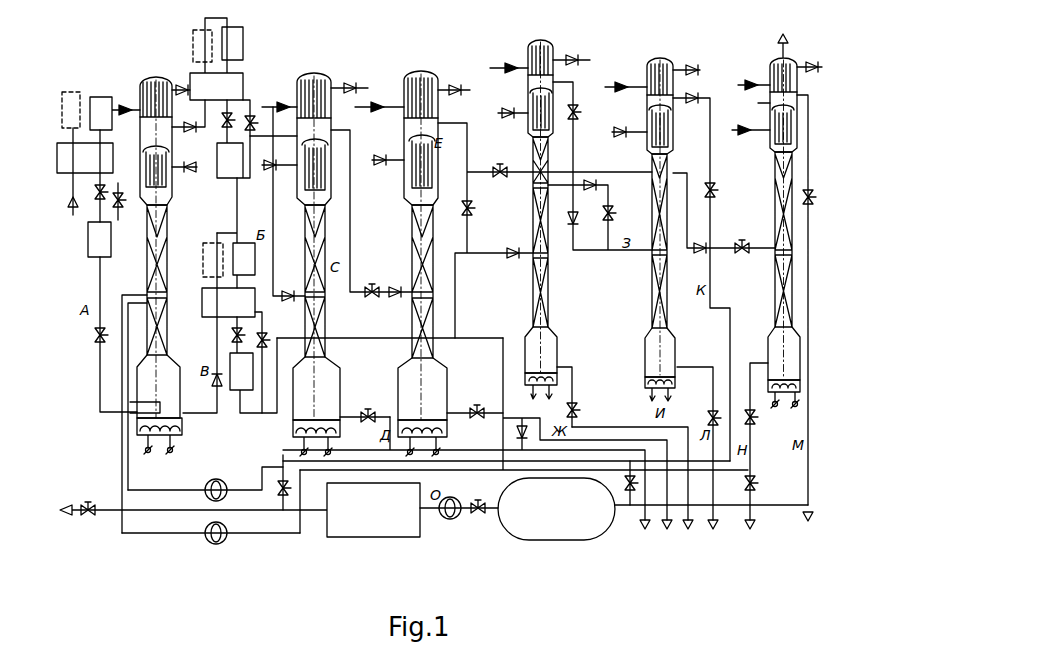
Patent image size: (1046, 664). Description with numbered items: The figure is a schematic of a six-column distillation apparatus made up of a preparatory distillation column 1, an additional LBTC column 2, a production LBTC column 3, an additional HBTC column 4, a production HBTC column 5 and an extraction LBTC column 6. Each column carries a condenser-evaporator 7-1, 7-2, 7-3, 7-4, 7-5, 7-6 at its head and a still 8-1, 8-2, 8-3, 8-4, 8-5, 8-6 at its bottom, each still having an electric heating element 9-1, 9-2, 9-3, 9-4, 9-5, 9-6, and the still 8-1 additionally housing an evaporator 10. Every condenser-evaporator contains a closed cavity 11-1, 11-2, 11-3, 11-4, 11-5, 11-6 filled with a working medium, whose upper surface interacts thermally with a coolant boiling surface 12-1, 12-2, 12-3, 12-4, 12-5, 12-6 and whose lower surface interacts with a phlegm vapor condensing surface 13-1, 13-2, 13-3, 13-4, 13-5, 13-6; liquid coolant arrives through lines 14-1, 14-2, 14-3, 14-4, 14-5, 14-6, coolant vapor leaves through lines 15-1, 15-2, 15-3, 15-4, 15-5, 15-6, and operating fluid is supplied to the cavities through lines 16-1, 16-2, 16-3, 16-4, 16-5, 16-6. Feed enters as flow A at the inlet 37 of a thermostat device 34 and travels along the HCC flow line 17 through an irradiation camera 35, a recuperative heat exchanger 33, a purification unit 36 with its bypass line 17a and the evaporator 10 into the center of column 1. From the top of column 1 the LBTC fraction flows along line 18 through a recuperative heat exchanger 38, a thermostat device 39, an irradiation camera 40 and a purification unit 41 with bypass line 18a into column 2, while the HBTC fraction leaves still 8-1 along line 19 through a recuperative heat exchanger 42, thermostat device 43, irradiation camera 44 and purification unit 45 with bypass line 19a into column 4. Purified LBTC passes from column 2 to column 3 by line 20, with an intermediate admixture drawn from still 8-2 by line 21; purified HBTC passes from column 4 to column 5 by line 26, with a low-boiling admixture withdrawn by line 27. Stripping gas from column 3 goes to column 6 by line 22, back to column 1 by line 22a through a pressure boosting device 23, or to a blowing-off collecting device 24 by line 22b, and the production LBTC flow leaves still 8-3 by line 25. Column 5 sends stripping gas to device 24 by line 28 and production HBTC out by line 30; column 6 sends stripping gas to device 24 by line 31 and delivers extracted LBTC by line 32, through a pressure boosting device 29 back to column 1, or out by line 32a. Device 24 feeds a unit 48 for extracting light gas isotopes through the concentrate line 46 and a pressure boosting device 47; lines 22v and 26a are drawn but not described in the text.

The preparatory distillation column 1 is at (150, 280).
The additional LBTC column 2 is at (323, 323).
The production LBTC column 3 is at (418, 253).
The additional HBTC column 4 is at (546, 301).
The production HBTC column 5 is at (658, 305).
The extraction LBTC column 6 is at (778, 301).
The condenser-evaporator 7-1 is at (165, 203).
The condenser-evaporator 7-2 is at (326, 208).
The condenser-evaporator 7-3 is at (433, 206).
The condenser-evaporator 7-4 is at (548, 138).
The condenser-evaporator 7-5 is at (670, 150).
The condenser-evaporator 7-6 is at (775, 147).
The still 8-1 is at (172, 368).
The still 8-2 is at (337, 371).
The still 8-3 is at (446, 380).
The still 8-4 is at (556, 352).
The still 8-5 is at (676, 354).
The still 8-6 is at (778, 346).
The electric heating element 9-1 is at (182, 433).
The electric heating element 9-2 is at (293, 433).
The electric heating element 9-3 is at (447, 432).
The electric heating element 9-4 is at (558, 380).
The electric heating element 9-5 is at (645, 383).
The electric heating element 9-6 is at (766, 377).
The evaporator 10 is at (150, 405).
The closed cavity 11-1 is at (190, 125).
The closed cavity 11-2 is at (273, 126).
The closed cavity 11-3 is at (404, 156).
The closed cavity 11-4 is at (528, 90).
The closed cavity 11-5 is at (650, 128).
The closed cavity 11-6 is at (754, 101).
The coolant boiling surface 12-1 is at (165, 79).
The coolant boiling surface 12-2 is at (331, 78).
The coolant boiling surface 12-3 is at (438, 78).
The coolant boiling surface 12-4 is at (556, 50).
The coolant boiling surface 12-5 is at (665, 62).
The coolant boiling surface 12-6 is at (775, 76).
The phlegm vapor condensing surface 13-1 is at (160, 180).
The phlegm vapor condensing surface 13-2 is at (320, 145).
The phlegm vapor condensing surface 13-3 is at (430, 166).
The phlegm vapor condensing surface 13-4 is at (550, 110).
The phlegm vapor condensing surface 13-5 is at (668, 125).
The phlegm vapor condensing surface 13-6 is at (776, 123).
The liquid coolant supply line 14-1 is at (115, 105).
The liquid coolant supply line 14-2 is at (284, 100).
The liquid coolant supply line 14-3 is at (385, 100).
The liquid coolant supply line 14-4 is at (510, 62).
The liquid coolant supply line 14-5 is at (620, 82).
The liquid coolant supply line 14-6 is at (754, 75).
The coolant vapor deducing line 15-1 is at (190, 99).
The coolant vapor deducing line 15-2 is at (350, 79).
The coolant vapor deducing line 15-3 is at (457, 99).
The coolant vapor deducing line 15-4 is at (575, 68).
The coolant vapor deducing line 15-5 is at (701, 77).
The coolant vapor deducing line 15-6 is at (813, 56).
The operating fluid supply line 16-1 is at (191, 176).
The operating fluid supply line 16-2 is at (276, 156).
The operating fluid supply line 16-3 is at (384, 171).
The operating fluid supply line 16-4 is at (504, 104).
The operating fluid supply line 16-5 is at (632, 146).
The operating fluid supply line 16-6 is at (752, 139).
The HCC flow line 17 is at (100, 378).
The bypass line 17a is at (130, 206).
The LBTC fraction flow line 18 is at (273, 262).
The bypass line 18a is at (273, 105).
The HBTC fraction flow line 19 is at (217, 394).
The bypass line 19a is at (273, 361).
The purified LBTC fraction flow line 20 is at (350, 196).
The intermediate admixture flow line 21 is at (368, 410).
The stripping gas flow line 22 is at (470, 148).
The line 22a is at (458, 302).
The line 22b is at (516, 419).
The inlet line with valve 22v is at (100, 508).
The pressure boosting device 23 is at (205, 531).
The blowing-off collecting device 24 is at (600, 528).
The production LBTC flow line 25 is at (478, 408).
The purified HBTC fraction flow line 26 is at (609, 191).
The bypass check valve 26a is at (577, 248).
The low-boiling admixture flow line 27 is at (578, 425).
The stripping gas flow line 28 is at (711, 206).
The pressure boosting device 29 is at (205, 486).
The production HBTC flow line 30 is at (712, 385).
The stripping gas flow line 31 is at (808, 256).
The extracted LBTC flow line 32 is at (757, 399).
The line 32a is at (280, 479).
The recuperative heat exchanger 33 is at (105, 155).
The thermostat device 34 is at (73, 92).
The irradiation camera 35 is at (103, 96).
The purification unit 36 is at (95, 240).
The inlet 37 is at (67, 213).
The recuperative heat exchanger 38 is at (243, 85).
The thermostat device 39 is at (193, 45).
The irradiation camera 40 is at (240, 50).
The purification unit 41 is at (232, 175).
The recuperative heat exchanger 42 is at (202, 300).
The thermostat device 43 is at (203, 260).
The irradiation camera 44 is at (238, 243).
The purification unit 45 is at (240, 380).
The light gas isotope concentrate line 46 is at (447, 519).
The pressure boosting device 47 is at (479, 515).
The unit for extracting light gas isotopes 48 is at (375, 528).